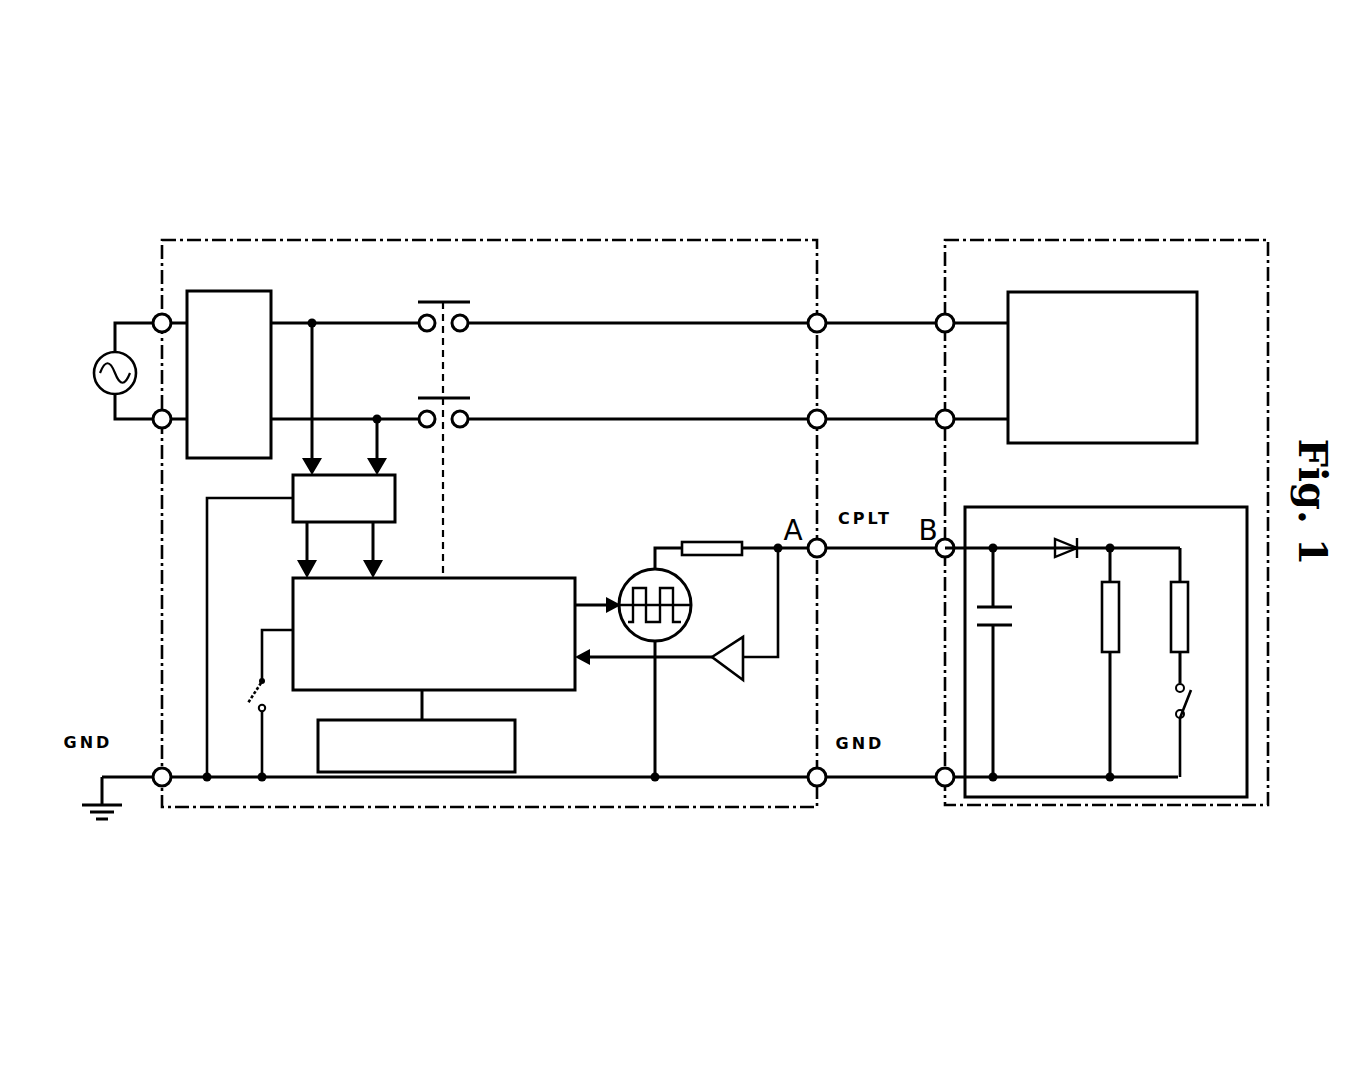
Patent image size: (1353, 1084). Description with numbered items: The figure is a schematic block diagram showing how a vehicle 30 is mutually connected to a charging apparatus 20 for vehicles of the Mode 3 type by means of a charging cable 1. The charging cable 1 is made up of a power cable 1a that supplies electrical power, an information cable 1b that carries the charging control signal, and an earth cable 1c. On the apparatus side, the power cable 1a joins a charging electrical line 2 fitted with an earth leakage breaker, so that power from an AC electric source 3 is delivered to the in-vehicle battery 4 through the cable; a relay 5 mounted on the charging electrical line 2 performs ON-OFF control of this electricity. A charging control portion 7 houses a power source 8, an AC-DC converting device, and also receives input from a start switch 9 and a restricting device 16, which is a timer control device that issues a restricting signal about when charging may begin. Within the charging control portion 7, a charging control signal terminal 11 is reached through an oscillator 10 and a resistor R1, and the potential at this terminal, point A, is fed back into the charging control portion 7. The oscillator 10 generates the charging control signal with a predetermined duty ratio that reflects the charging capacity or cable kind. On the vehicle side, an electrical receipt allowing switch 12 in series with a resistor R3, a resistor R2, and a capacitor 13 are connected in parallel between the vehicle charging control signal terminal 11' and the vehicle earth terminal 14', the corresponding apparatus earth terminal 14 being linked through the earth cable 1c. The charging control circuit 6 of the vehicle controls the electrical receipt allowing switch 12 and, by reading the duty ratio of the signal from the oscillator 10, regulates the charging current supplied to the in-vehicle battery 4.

The charging cable 1 is at (884, 436).
The power cable 1a is at (883, 419).
The information cable 1b is at (885, 547).
The earth cable 1c is at (917, 775).
The charging electrical line 2 is at (698, 421).
The AC electric source 3 is at (122, 394).
The in-vehicle battery 4 is at (1152, 323).
The relay 5 is at (441, 293).
The charging control circuit 6 is at (1096, 625).
The charging control portion 7 is at (535, 673).
The power source 8 is at (372, 510).
The start switch 9 is at (262, 683).
The oscillator 10 is at (632, 572).
The charging control signal terminal 11 is at (775, 504).
The charging control signal terminal 11' is at (973, 504).
The electrical receipt allowing switch 12 is at (1186, 715).
The capacitor 13 is at (1003, 628).
The earth terminal 14 is at (804, 832).
The earth terminal 14' is at (918, 832).
The restricting device 16 is at (442, 778).
The charging apparatus for vehicles 20 is at (525, 240).
The vehicle 30 is at (1096, 240).
The resistor R1 is at (749, 529).
The resistor R2 is at (1132, 665).
The resistor R3 is at (1204, 615).